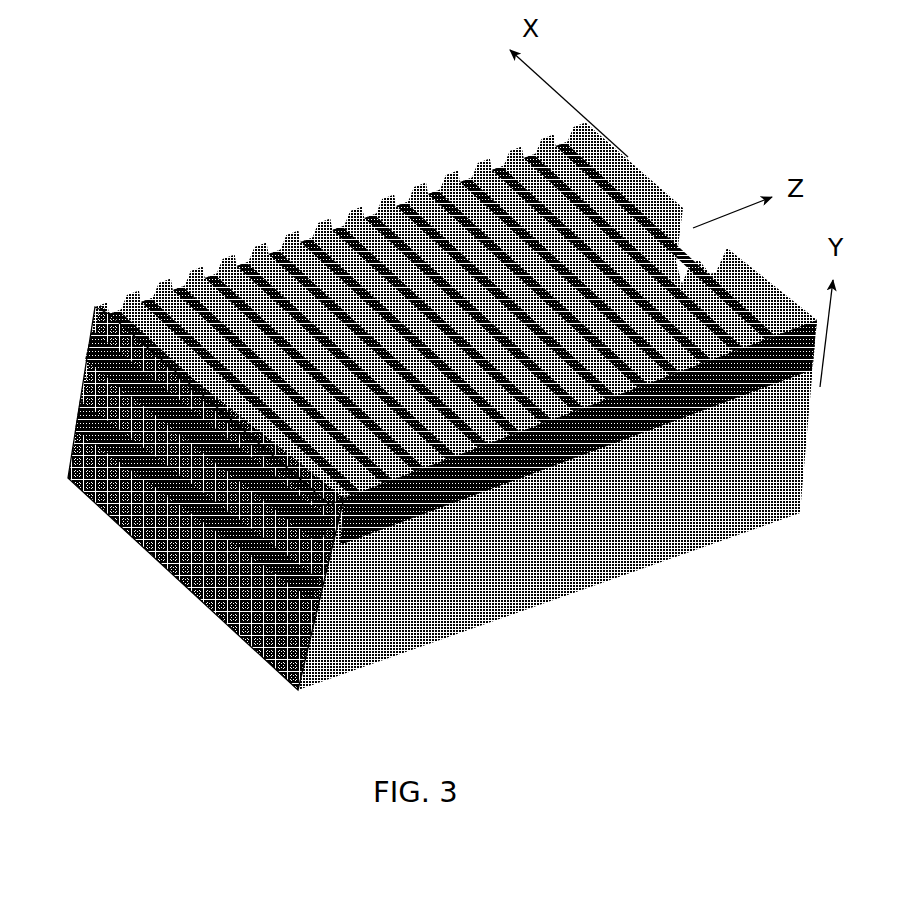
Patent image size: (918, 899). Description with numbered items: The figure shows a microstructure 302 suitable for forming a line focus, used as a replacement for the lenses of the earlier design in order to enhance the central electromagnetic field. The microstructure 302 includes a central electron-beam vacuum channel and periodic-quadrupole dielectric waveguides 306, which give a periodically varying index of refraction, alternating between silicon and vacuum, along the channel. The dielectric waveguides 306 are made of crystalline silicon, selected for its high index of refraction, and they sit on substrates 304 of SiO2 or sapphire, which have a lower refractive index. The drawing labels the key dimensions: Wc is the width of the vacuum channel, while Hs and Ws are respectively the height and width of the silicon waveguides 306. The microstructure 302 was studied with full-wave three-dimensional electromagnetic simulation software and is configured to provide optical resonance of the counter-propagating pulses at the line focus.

The microstructure 302 is at (210, 177).
The substrates 304 is at (582, 523).
The dielectric waveguides 306 is at (460, 555).
The height of the silicon waveguides Hs is at (90, 353).
The vacuum channel width Wc is at (175, 512).
The width of the silicon waveguides Ws is at (333, 637).